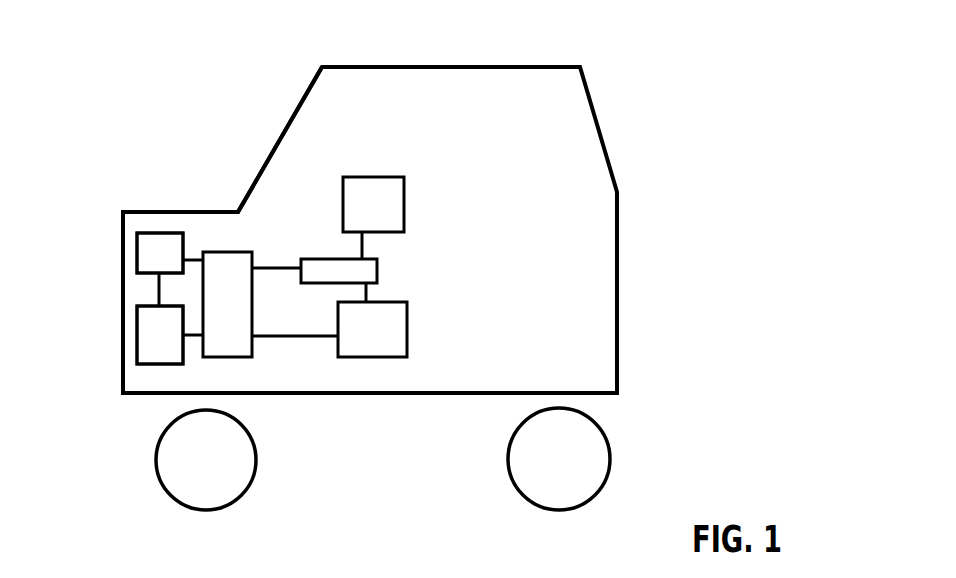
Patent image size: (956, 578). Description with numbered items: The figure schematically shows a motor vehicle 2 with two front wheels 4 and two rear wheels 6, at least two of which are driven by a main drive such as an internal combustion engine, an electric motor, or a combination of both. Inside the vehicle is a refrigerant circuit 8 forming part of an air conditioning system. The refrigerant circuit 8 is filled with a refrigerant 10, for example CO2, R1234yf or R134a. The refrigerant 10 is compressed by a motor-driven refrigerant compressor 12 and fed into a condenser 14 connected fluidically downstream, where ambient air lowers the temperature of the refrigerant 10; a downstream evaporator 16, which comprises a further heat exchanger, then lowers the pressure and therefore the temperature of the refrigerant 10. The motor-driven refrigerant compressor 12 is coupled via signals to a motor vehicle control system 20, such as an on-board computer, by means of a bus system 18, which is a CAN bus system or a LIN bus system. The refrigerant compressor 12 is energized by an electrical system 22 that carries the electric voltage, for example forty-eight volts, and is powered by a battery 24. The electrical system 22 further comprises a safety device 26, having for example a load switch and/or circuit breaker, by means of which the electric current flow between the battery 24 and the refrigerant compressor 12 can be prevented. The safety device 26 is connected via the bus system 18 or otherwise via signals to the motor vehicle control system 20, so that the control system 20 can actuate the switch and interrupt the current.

The motor vehicle 2 is at (635, 98).
The front wheels 4 is at (198, 475).
The rear wheels 6 is at (551, 474).
The refrigerant circuit 8 is at (195, 191).
The refrigerant 10 is at (158, 290).
The motor-driven refrigerant compressor 12 is at (214, 315).
The condenser 14 is at (147, 268).
The evaporator 16 is at (147, 350).
The bus system 18 is at (288, 336).
The motor vehicle control system 20 is at (360, 345).
The electrical system 22 is at (280, 231).
The battery 24 is at (360, 220).
The safety device 26 is at (323, 259).